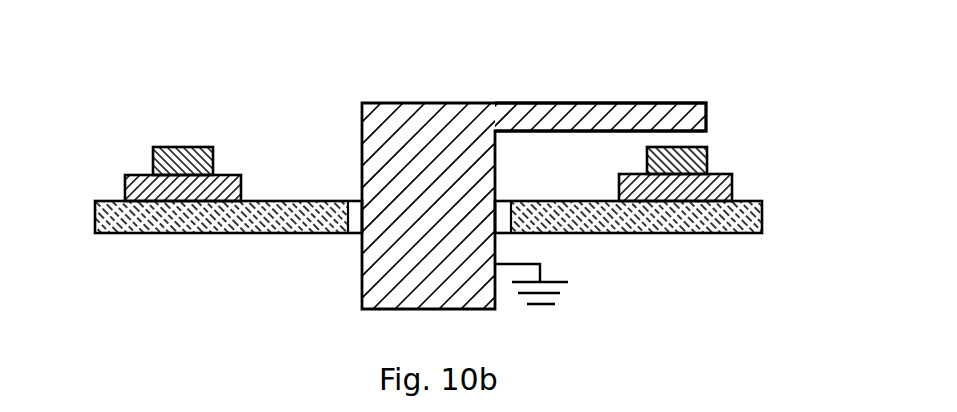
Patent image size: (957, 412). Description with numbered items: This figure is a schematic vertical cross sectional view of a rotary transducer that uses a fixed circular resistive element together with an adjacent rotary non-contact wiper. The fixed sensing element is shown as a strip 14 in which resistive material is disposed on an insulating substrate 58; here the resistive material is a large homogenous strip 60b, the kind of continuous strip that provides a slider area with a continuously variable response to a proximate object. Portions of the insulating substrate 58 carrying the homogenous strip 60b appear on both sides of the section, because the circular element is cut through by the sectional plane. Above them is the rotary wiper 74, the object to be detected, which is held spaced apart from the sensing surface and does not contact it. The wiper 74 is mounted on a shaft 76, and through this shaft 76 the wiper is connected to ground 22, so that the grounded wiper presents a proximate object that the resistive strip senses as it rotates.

The strip 14 is at (268, 145).
The insulating substrate 58 is at (125, 187).
The large homogenous strip 60b is at (189, 148).
The rotary wiper 74 is at (567, 103).
The shaft 76 is at (361, 262).
The ground 22 is at (555, 304).